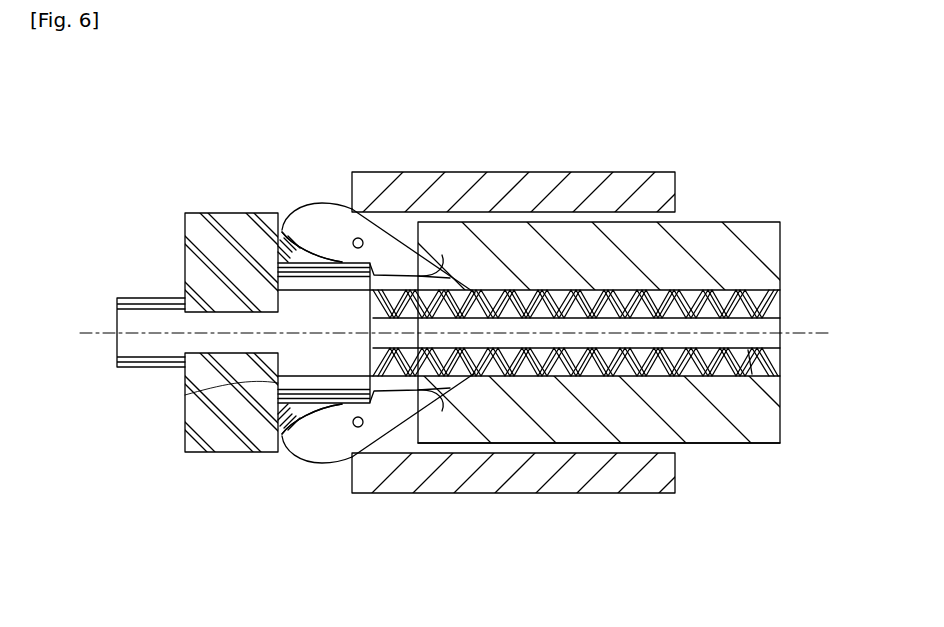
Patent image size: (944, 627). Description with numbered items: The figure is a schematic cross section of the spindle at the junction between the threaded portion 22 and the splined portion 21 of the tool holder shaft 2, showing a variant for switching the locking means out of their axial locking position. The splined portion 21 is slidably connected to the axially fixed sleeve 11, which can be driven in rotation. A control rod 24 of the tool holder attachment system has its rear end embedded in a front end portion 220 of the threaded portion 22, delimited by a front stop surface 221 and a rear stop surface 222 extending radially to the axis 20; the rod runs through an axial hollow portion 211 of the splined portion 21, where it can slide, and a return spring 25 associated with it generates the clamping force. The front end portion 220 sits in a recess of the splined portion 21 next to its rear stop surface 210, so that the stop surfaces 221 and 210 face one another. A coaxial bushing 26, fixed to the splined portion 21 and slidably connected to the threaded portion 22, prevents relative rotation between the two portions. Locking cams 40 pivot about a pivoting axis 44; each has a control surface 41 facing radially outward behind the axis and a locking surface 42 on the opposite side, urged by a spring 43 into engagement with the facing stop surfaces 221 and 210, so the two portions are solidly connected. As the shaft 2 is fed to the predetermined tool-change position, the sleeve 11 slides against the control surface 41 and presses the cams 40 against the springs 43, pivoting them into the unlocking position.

The tool holder shaft 2 is at (804, 288).
The sleeve 11 is at (613, 190).
The axis 20 is at (785, 333).
The splined portion 21 is at (762, 248).
The threaded portion 22 is at (172, 298).
The control rod 24 is at (762, 339).
The return spring 25 is at (750, 378).
The bushing 26 is at (185, 256).
The locking cam 40 is at (291, 215).
The control surface 41 is at (304, 203).
The locking surface 42 is at (442, 255).
The spring 43 is at (303, 270).
The pivoting axis 44 is at (352, 243).
The rear stop surface 210 is at (418, 229).
The axial hollow portion 211 is at (625, 446).
The front end portion 220 is at (278, 412).
The front stop surface 221 is at (393, 400).
The rear stop surface 222 is at (185, 395).